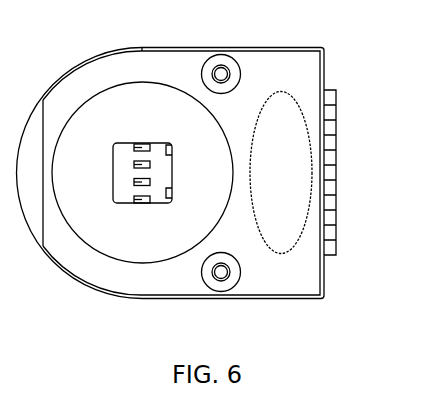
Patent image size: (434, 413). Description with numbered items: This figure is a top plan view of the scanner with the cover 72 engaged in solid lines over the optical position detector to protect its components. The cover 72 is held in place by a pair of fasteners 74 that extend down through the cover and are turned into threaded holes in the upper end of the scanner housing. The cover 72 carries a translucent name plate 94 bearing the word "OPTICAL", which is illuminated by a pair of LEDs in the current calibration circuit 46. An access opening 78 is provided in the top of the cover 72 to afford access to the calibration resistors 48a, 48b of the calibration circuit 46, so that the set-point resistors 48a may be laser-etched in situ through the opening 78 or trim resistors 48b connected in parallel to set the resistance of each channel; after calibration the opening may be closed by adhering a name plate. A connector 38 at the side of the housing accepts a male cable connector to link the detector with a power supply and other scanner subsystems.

The cover 72 is at (82, 75).
The fasteners 74 is at (226, 72).
The name plate 94 is at (282, 100).
The connector 38 is at (328, 243).
The current calibration circuit 46 is at (172, 150).
The calibration resistors 48a is at (150, 163).
The calibration resistors 48b is at (134, 182).
The access opening 78 is at (134, 201).